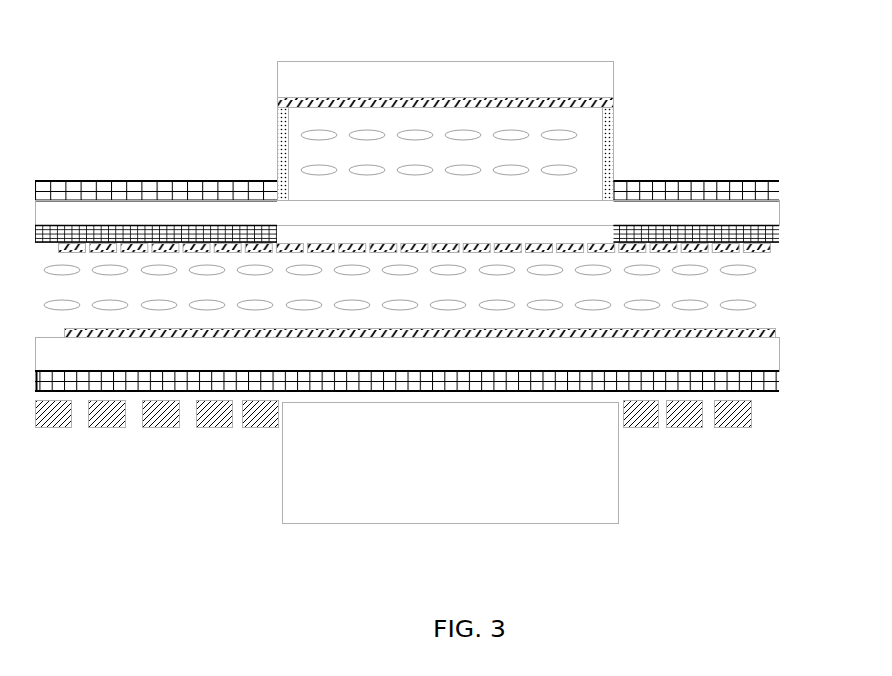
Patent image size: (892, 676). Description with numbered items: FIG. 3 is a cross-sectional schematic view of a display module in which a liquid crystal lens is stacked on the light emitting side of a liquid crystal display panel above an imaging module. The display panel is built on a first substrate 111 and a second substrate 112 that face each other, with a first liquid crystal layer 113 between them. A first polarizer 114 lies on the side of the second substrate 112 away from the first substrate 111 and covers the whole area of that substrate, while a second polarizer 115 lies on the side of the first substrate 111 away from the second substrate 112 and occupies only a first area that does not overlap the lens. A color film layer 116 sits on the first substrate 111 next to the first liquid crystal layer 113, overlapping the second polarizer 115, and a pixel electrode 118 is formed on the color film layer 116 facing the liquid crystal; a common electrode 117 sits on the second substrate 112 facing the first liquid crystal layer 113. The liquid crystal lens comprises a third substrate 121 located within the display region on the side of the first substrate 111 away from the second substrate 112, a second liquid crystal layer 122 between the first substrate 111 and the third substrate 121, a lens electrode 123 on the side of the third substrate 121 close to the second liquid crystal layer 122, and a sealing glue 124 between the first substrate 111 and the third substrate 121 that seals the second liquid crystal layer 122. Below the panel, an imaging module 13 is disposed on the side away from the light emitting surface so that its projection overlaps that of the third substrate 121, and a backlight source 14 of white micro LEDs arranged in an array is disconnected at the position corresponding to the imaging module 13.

The imaging module 13 is at (606, 487).
The backlight source 14 is at (752, 411).
The first substrate 111 is at (780, 214).
The second substrate 112 is at (779, 358).
The first liquid crystal layer 113 is at (777, 295).
The first polarizer 114 is at (779, 384).
The second polarizer 115 is at (780, 188).
The color film layer 116 is at (780, 233).
The common electrode 117 is at (777, 332).
The pixel electrode 118 is at (780, 249).
The third substrate 121 is at (613, 80).
The second liquid crystal layer 122 is at (474, 118).
The lens electrode 123 is at (613, 103).
The sealing glue 124 is at (613, 160).